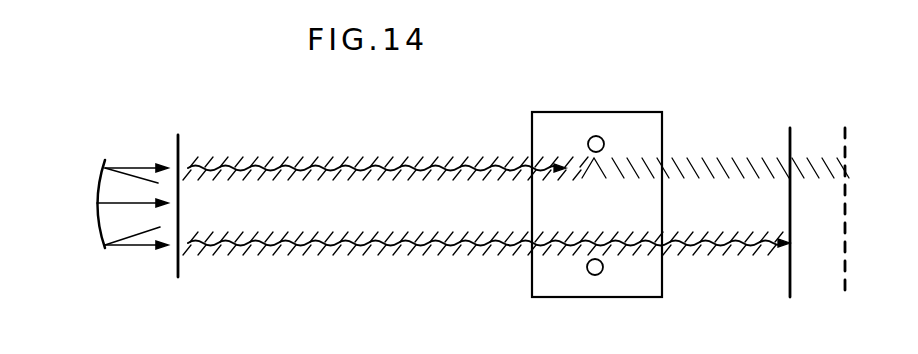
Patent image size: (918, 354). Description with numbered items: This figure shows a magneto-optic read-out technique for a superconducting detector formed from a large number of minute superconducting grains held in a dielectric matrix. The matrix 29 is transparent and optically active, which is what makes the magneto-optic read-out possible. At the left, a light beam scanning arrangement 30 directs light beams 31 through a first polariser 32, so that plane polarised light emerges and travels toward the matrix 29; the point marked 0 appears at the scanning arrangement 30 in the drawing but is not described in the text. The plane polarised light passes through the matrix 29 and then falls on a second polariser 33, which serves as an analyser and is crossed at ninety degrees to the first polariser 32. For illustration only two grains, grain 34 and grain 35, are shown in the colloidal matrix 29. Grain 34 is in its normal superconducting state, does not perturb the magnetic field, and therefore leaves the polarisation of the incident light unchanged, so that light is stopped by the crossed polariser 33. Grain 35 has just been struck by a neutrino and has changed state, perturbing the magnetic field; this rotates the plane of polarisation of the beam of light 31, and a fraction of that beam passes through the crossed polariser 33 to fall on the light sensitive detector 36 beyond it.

The object 0 is at (104, 122).
The matrix 29 is at (664, 133).
The light beam scanning arrangement 30 is at (104, 250).
The light beams 31 is at (143, 205).
The first polariser 32 is at (180, 268).
The second polariser 33 is at (790, 288).
The grain 34 is at (595, 275).
The grain 35 is at (589, 137).
The light sensitive detector 36 is at (845, 138).